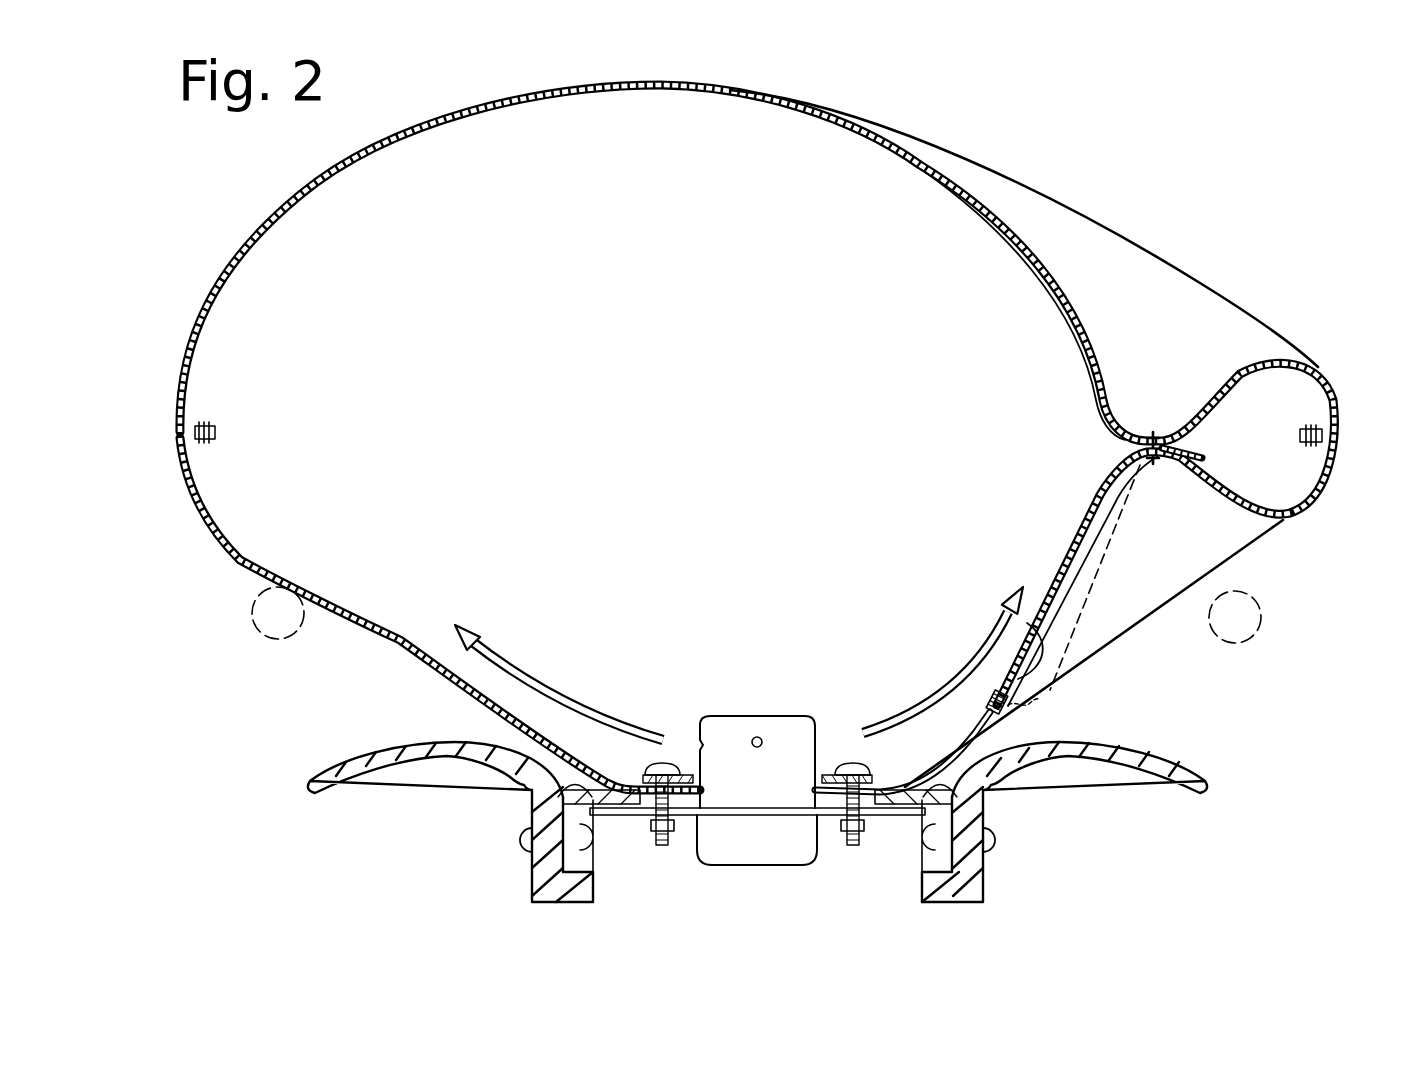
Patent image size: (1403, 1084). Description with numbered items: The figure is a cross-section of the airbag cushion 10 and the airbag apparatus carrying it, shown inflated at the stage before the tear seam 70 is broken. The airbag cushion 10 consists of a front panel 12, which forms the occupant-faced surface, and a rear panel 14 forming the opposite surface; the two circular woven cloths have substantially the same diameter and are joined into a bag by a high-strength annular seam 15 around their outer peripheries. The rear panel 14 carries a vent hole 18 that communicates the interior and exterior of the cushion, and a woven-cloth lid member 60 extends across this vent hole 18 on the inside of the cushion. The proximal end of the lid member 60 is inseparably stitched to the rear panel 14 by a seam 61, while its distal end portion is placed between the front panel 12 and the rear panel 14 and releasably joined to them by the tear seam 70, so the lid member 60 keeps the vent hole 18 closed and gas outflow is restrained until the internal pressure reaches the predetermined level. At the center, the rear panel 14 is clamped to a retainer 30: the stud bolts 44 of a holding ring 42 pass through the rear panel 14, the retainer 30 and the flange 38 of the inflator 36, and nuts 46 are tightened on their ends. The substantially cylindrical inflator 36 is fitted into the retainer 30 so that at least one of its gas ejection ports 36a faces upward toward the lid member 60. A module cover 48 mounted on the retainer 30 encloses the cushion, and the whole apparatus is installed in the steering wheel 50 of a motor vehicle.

The airbag cushion 10 is at (1100, 132).
The front panel 12 is at (727, 97).
The rear panel 14 is at (245, 548).
The seam 15 is at (205, 440).
The vent hole 18 is at (1050, 638).
The retainer 30 is at (975, 796).
The inflator 36 is at (770, 853).
The gas ejection ports 36a is at (702, 745).
The flange 38 is at (712, 816).
The holding ring 42 is at (838, 772).
The stud bolts 44 is at (663, 846).
The nuts 46 is at (655, 832).
The module cover 48 is at (310, 789).
The steering wheel 50 is at (250, 630).
The lid member 60 is at (1085, 545).
The seam 61 is at (1035, 696).
The tear seam 70 is at (1153, 434).